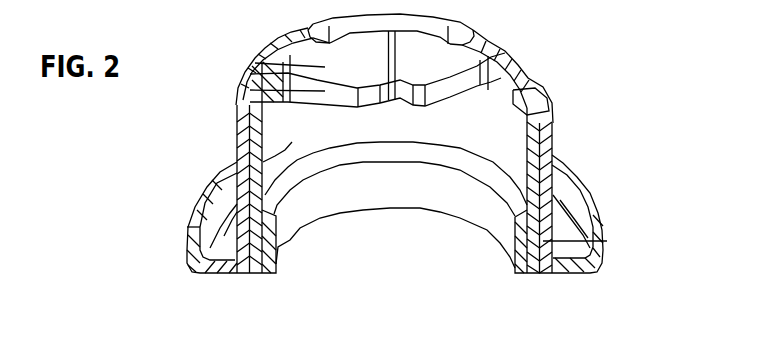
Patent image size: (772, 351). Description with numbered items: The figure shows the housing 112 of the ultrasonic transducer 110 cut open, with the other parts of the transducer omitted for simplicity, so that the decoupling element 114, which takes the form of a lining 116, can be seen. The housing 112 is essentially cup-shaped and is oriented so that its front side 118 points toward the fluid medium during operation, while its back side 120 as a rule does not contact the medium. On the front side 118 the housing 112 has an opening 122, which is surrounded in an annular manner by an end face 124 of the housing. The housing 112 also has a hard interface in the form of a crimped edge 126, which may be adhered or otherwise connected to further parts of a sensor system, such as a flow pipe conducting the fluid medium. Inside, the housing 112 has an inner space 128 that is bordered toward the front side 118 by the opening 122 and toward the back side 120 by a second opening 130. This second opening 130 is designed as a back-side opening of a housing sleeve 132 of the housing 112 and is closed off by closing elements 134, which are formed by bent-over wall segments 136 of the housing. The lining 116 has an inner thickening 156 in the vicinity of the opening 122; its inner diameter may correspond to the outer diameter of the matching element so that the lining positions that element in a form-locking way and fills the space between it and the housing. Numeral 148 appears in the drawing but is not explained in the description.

The ultrasonic transducer 110 is at (461, 75).
The housing 112 is at (613, 190).
The decoupling element 114 is at (188, 167).
The lining 116 is at (249, 167).
The front side 118 is at (395, 275).
The back side 120 is at (328, 182).
The opening 122 is at (260, 244).
The end face 124 is at (568, 249).
The crimped edge 126 is at (439, 221).
The inner space 128 is at (330, 134).
The second opening 130 is at (252, 66).
The housing sleeve 132 is at (539, 190).
The closing elements 134 is at (535, 65).
The bent-over wall segments 136 is at (505, 78).
The base 148 is at (312, 345).
The inner thickening 156 is at (615, 243).